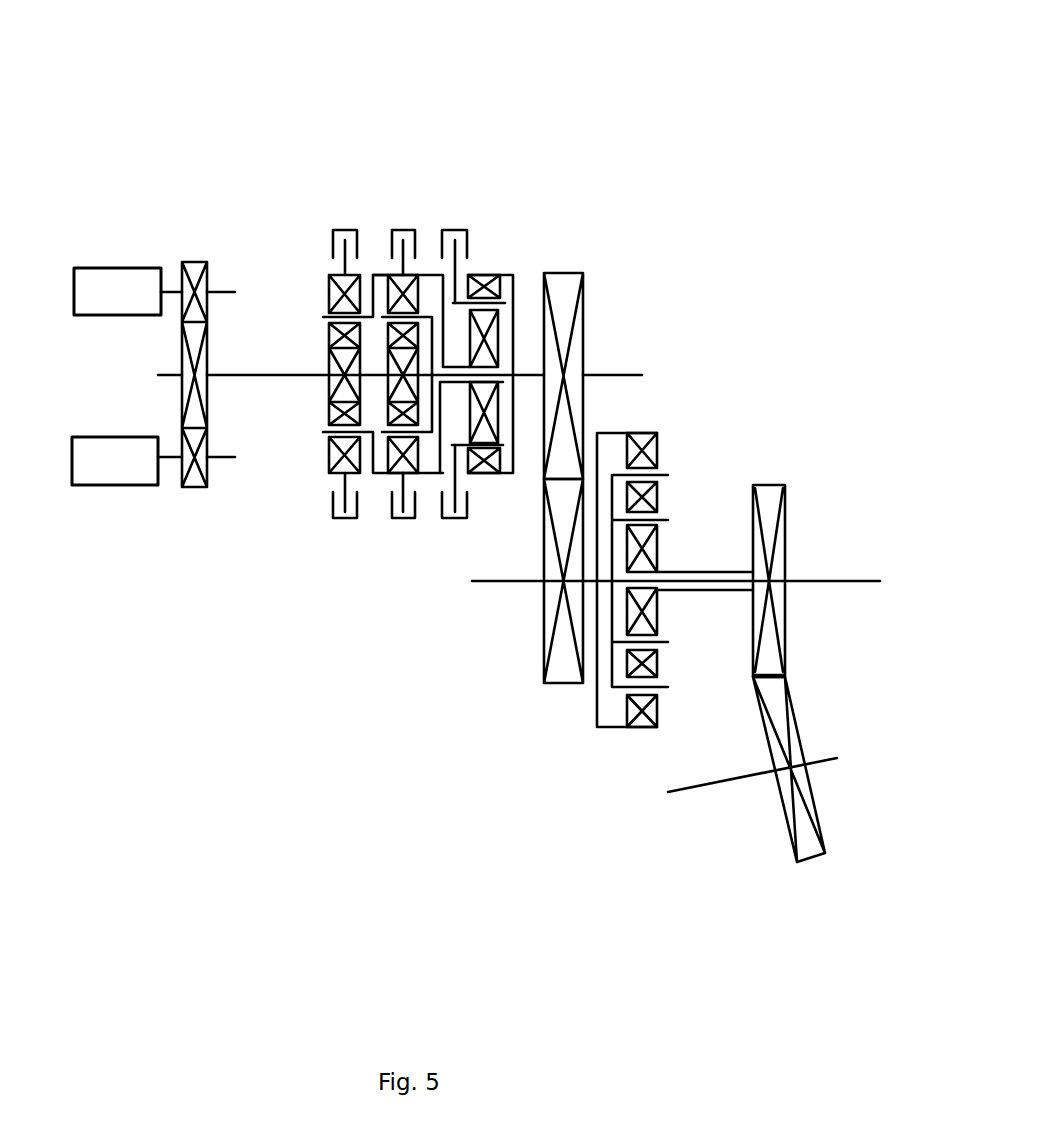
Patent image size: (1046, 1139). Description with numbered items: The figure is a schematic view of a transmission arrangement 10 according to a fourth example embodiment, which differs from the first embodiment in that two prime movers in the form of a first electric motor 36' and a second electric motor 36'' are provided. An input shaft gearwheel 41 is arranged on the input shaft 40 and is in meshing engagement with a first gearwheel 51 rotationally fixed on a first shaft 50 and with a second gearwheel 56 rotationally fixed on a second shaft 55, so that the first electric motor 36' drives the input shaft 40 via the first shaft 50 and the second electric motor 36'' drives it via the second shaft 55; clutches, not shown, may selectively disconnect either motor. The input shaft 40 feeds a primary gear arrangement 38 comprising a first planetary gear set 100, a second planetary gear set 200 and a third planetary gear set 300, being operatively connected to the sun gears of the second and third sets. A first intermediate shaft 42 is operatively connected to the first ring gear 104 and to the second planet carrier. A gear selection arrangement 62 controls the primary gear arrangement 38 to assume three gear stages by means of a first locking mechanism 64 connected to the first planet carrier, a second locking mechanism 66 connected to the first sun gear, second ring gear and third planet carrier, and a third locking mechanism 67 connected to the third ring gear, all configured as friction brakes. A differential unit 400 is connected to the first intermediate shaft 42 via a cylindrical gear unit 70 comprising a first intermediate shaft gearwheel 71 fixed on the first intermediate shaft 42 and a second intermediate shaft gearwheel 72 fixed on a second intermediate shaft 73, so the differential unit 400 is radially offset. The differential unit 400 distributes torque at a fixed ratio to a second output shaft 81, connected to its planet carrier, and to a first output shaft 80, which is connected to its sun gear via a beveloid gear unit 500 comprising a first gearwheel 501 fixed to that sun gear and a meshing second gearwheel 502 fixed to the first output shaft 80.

The transmission arrangement 10 is at (743, 232).
The first electric motor 36' is at (112, 254).
The second electric motor 36'' is at (114, 424).
The primary gear arrangement 38 is at (542, 103).
The input shaft 40 is at (297, 373).
The input shaft gearwheel 41 is at (207, 410).
The first intermediate shaft 42 is at (618, 373).
The first shaft 50 is at (220, 290).
The first gearwheel 51 is at (183, 390).
The second shaft 55 is at (223, 465).
The second gearwheel 56 is at (192, 488).
The gear selection arrangement 62 is at (310, 548).
The first locking mechanism 64 is at (458, 522).
The second locking mechanism 66 is at (413, 522).
The third locking mechanism 67 is at (338, 522).
The cylindrical gear unit 70 is at (571, 480).
The first intermediate shaft gearwheel 71 is at (587, 278).
The second intermediate shaft gearwheel 72 is at (555, 623).
The second intermediate shaft 73 is at (518, 585).
The first output shaft 80 is at (713, 787).
The second output shaft 81 is at (847, 583).
The first planetary gear set 100 is at (525, 377).
The first ring gear 104 is at (497, 275).
The second planetary gear set 200 is at (438, 392).
The third planetary gear set 300 is at (365, 390).
The differential unit 400 is at (636, 756).
The beveloid gear unit 500 is at (844, 733).
The first gearwheel 501 is at (785, 527).
The second gearwheel 502 is at (817, 818).